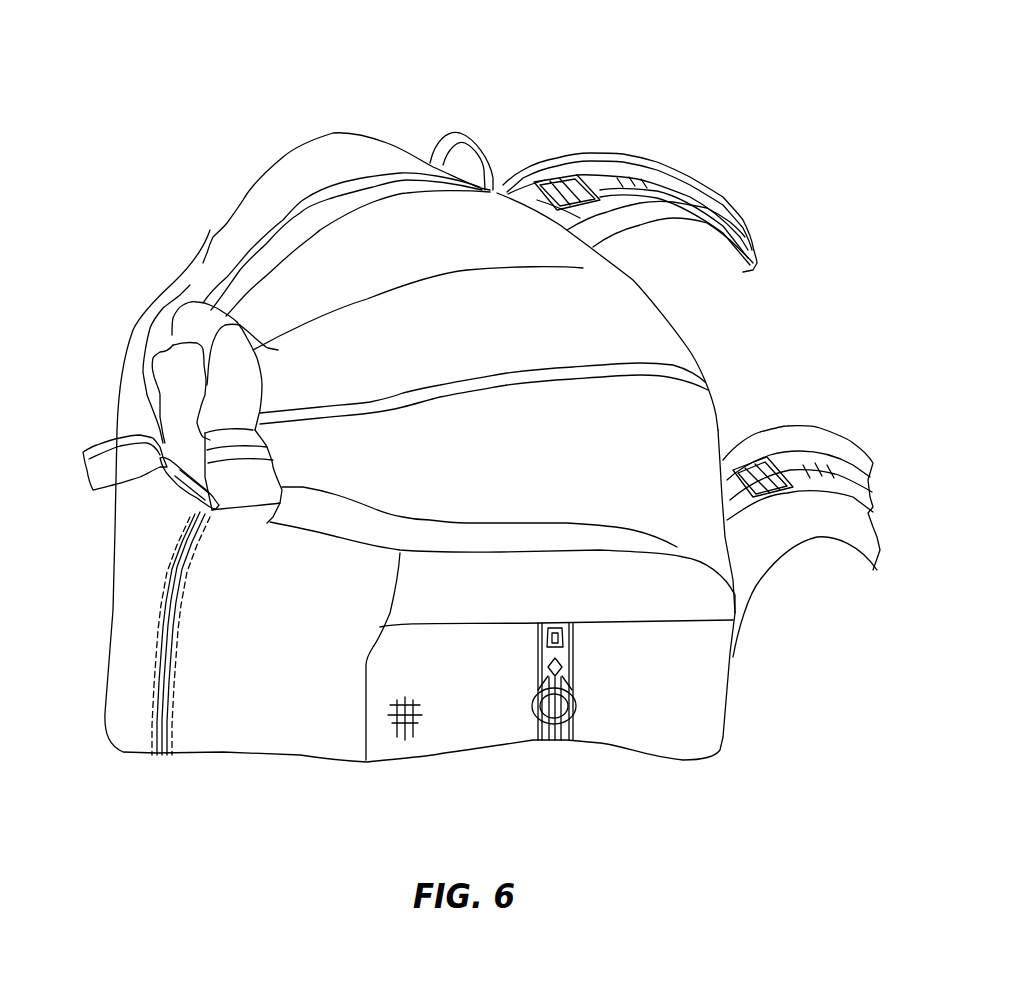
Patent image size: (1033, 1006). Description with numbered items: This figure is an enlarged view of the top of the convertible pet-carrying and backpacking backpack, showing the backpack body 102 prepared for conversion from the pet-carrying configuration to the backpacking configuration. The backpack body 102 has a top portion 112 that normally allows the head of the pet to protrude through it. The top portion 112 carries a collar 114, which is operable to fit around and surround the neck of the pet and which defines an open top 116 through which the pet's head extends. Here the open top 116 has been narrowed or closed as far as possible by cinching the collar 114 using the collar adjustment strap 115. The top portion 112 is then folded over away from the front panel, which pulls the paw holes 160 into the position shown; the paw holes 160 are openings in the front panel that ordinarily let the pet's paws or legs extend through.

The backpack body 102 is at (670, 727).
The top portion 112 is at (487, 243).
The collar 114 is at (189, 329).
The collar adjustment strap 115 is at (167, 473).
The open top 116 is at (192, 382).
The paw holes 160 is at (358, 203).